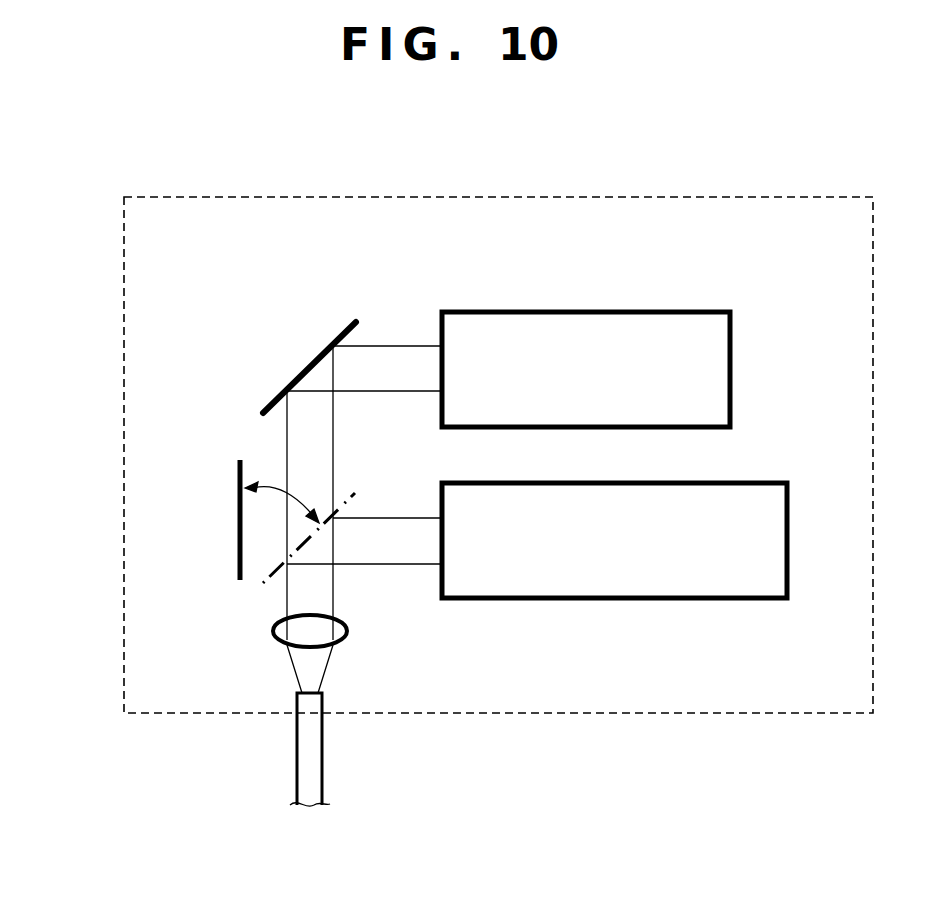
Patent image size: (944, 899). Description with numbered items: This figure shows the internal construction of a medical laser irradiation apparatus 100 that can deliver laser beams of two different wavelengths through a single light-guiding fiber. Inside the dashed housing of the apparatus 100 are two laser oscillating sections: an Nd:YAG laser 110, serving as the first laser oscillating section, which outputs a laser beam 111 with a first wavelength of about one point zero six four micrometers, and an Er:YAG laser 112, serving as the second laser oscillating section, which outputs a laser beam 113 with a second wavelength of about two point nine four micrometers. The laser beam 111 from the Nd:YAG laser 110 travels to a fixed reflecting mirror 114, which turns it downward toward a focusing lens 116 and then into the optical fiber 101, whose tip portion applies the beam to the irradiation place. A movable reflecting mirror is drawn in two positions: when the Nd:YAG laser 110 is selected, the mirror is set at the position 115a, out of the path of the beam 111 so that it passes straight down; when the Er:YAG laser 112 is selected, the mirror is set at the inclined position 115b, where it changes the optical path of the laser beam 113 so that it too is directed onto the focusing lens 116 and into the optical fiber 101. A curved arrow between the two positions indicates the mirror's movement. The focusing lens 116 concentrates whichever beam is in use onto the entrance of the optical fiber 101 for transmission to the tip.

The laser irradiation apparatus 100 is at (667, 713).
The quartz optical fiber 101 is at (311, 748).
The Nd:YAG laser 110 is at (587, 312).
The laser beam 111 is at (397, 350).
The Er:YAG laser 112 is at (713, 483).
The laser beam 113 is at (396, 540).
The fixed reflecting mirror 114 is at (303, 342).
The movable reflecting mirror position 115a is at (240, 506).
The movable reflecting mirror position 115b is at (268, 582).
The focusing lens 116 is at (273, 631).